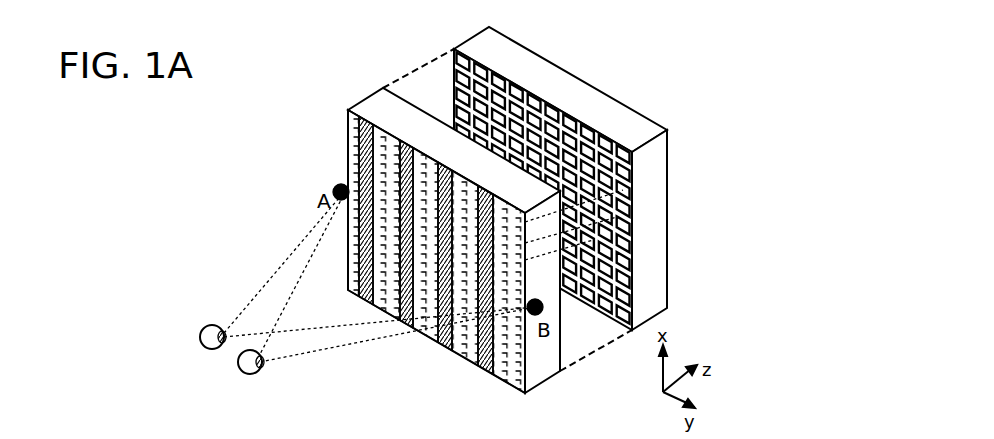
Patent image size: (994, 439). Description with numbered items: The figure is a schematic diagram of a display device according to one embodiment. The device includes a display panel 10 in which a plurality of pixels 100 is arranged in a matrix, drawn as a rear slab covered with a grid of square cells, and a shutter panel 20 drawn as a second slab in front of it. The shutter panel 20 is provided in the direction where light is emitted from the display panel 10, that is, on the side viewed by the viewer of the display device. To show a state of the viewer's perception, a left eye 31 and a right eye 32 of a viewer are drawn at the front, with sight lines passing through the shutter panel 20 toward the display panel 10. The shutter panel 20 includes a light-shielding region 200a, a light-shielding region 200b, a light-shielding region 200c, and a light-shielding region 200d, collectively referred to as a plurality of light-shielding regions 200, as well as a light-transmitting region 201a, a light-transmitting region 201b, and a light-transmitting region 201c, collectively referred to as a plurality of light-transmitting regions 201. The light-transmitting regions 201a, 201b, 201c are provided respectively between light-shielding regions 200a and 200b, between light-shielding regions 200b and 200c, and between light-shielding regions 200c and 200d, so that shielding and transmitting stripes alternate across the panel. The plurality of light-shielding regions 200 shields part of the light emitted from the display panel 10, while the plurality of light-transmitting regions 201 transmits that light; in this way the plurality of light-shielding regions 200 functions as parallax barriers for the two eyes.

The pixels 100 is at (520, 178).
The display panel 10 is at (560, 178).
The shutter panel 20 is at (413, 243).
The plurality of light-shielding regions 200 is at (360, 246).
The light-shielding region 200a is at (352, 125).
The light-shielding region 200b is at (407, 170).
The light-shielding region 200c is at (450, 188).
The light-shielding region 200d is at (487, 220).
The plurality of light-transmitting regions 201 is at (411, 281).
The light-transmitting region 201a is at (401, 318).
The light-transmitting region 201b is at (441, 341).
The light-transmitting region 201c is at (463, 291).
The left eye 31 is at (194, 340).
The right eye 32 is at (234, 372).